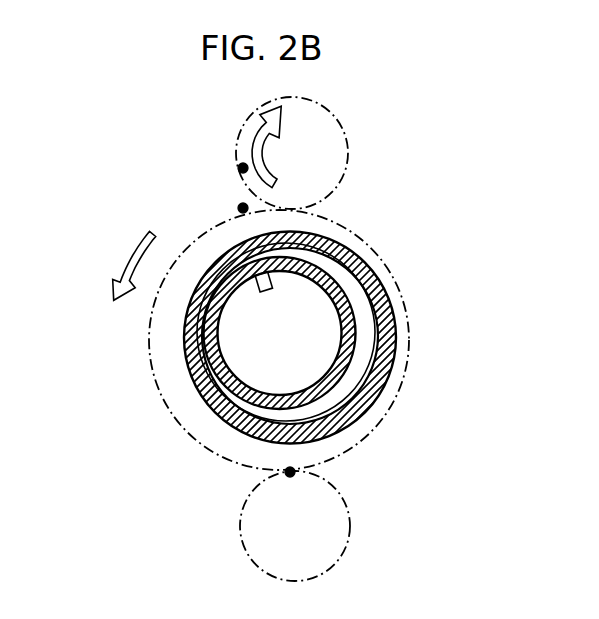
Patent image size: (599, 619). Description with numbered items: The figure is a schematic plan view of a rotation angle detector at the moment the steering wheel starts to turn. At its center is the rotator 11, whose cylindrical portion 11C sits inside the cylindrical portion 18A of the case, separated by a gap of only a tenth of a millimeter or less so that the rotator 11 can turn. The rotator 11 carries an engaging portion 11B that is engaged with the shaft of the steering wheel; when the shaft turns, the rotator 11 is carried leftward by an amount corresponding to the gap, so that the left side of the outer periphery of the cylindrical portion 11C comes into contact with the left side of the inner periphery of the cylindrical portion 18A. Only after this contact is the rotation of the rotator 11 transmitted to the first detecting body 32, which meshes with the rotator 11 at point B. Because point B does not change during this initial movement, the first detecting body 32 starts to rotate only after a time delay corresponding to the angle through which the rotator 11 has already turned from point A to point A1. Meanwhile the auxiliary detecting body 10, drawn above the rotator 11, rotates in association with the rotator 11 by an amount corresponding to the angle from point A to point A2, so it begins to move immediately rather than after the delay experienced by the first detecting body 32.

The auxiliary detecting body 10 is at (315, 147).
The rotator 11 is at (407, 376).
The engaging portion 11B is at (270, 283).
The cylindrical portion 11C is at (357, 322).
The cylindrical portion 18A is at (190, 373).
The first detecting body 32 is at (265, 530).
The point A1 is at (243, 208).
The point A2 is at (243, 168).
The point B is at (295, 474).